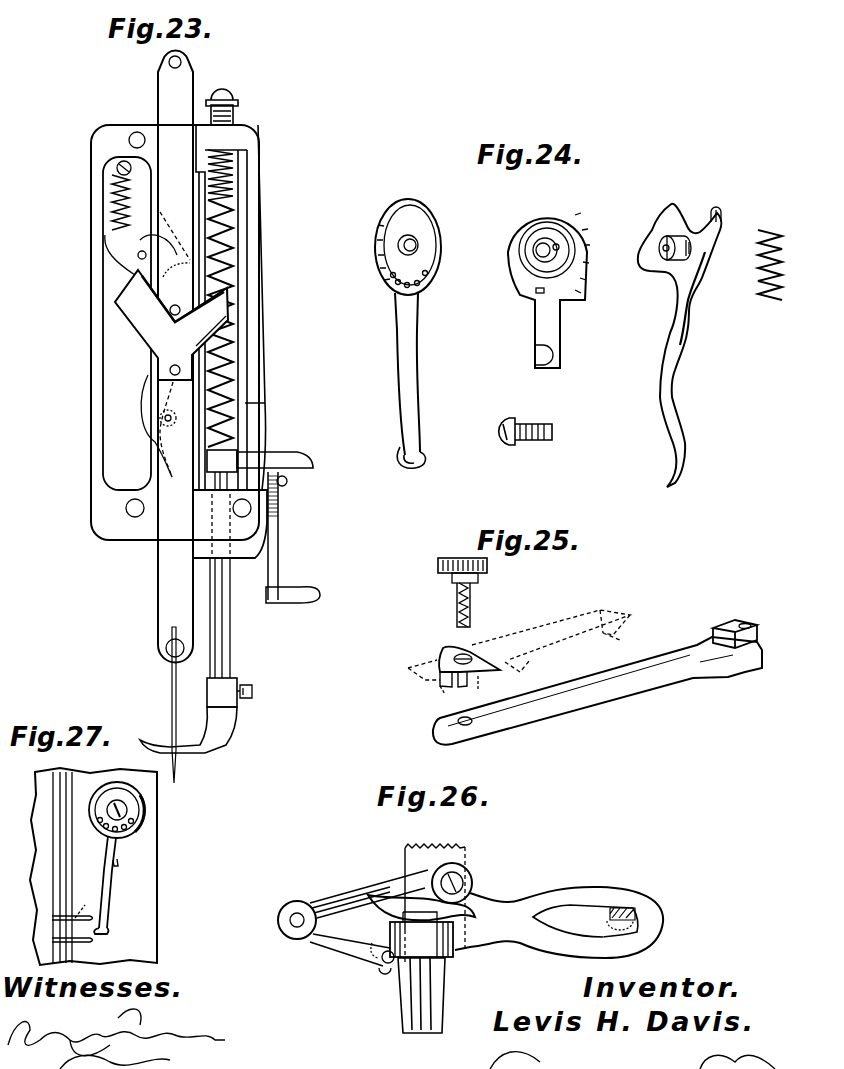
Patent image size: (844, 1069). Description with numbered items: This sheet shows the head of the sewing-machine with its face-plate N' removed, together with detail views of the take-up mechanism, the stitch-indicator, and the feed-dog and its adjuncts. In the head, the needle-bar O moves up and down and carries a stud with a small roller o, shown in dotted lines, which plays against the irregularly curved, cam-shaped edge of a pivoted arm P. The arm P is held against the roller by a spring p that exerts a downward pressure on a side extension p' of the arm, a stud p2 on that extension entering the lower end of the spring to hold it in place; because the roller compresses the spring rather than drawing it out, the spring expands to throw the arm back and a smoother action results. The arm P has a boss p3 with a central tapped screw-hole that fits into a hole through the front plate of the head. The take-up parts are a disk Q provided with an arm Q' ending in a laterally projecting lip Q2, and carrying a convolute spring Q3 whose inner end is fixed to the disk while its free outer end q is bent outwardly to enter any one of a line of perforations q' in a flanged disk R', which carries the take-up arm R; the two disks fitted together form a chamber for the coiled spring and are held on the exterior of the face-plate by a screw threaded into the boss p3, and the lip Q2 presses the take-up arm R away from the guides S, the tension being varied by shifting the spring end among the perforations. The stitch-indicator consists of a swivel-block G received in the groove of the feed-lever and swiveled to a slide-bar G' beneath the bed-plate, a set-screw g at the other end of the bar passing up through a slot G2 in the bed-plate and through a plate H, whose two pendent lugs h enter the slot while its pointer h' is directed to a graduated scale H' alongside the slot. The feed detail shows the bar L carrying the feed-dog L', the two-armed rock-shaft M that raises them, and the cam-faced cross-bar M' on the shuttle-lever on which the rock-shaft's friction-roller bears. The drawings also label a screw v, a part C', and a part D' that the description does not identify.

In FIG. 23, the needle-bar O is at (185, 90).
In FIG. 23, the face-plate N' is at (162, 332).
In FIG. 27, the face-plate N' is at (104, 866).
In FIG. 23, the spring p is at (127, 195).
In FIG. 24, the spring p is at (777, 265).
In FIG. 23, the side extension p' is at (131, 249).
In FIG. 24, the side extension p' is at (731, 241).
In FIG. 23, the stud p2 is at (110, 228).
In FIG. 24, the stud p2 is at (725, 211).
In FIG. 24, the boss p3 is at (659, 248).
In FIG. 23, the screw v is at (140, 258).
In FIG. 24, the screw v is at (534, 431).
In FIG. 27, the screw v is at (117, 800).
In FIG. 23, the forked lever C' is at (171, 325).
In FIG. 23, the pivoted arm P is at (148, 402).
In FIG. 24, the pivoted arm P is at (688, 335).
In FIG. 23, the roller o is at (170, 426).
In FIG. 24, the take-up arm R is at (399, 380).
In FIG. 27, the take-up arm R is at (116, 885).
In FIG. 24, the disk R' is at (395, 247).
In FIG. 27, the disk R' is at (159, 827).
In FIG. 24, the free end of spring q is at (513, 311).
In FIG. 24, the perforations q' is at (420, 295).
In FIG. 27, the perforations q' is at (109, 842).
In FIG. 24, the disk Q is at (543, 290).
In FIG. 27, the disk Q is at (143, 810).
In FIG. 24, the arm Q' is at (520, 329).
In FIG. 27, the arm Q' is at (133, 860).
In FIG. 24, the lip Q2 is at (548, 353).
In FIG. 27, the lip Q2 is at (118, 868).
In FIG. 24, the convolute spring Q3 is at (522, 265).
In FIG. 25, the set-screw g is at (459, 592).
In FIG. 25, the swivel-block G is at (735, 627).
In FIG. 25, the slide-bar G' is at (597, 691).
In FIG. 25, the slot G2 is at (519, 645).
In FIG. 25, the plate H is at (464, 660).
In FIG. 25, the graduated scale H' is at (610, 592).
In FIG. 25, the pendent lugs h is at (463, 693).
In FIG. 25, the pointer h' is at (509, 678).
In FIG. 26, the bar L is at (547, 910).
In FIG. 26, the feed-dog L' is at (424, 903).
In FIG. 26, the two-armed rock-shaft M is at (353, 922).
In FIG. 26, the cross-bar M' is at (432, 930).
In FIG. 26, the block D' is at (421, 972).
In FIG. 27, the guides S is at (72, 918).